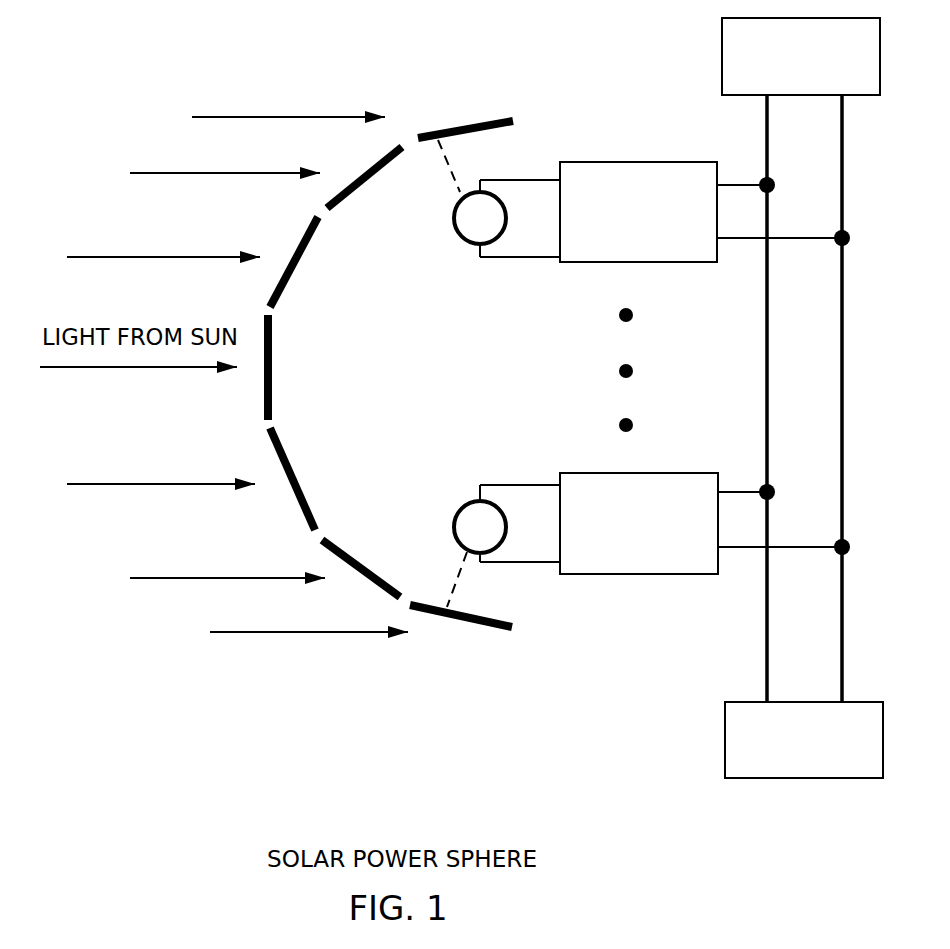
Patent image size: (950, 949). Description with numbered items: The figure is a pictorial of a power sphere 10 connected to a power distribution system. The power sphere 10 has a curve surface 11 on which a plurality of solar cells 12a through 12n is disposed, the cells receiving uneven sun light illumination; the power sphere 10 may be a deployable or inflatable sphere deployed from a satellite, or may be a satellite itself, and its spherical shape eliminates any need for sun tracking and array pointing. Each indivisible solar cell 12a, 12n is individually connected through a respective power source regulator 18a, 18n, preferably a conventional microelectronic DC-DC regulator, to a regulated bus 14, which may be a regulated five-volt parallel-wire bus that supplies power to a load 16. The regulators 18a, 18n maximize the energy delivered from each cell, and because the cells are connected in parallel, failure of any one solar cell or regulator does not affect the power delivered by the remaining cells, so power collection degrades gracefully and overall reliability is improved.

The power sphere 10 is at (513, 625).
The curve surface 11 is at (271, 418).
The solar cell 12a is at (455, 229).
The solar cell 12n is at (460, 506).
The regulated bus 14 is at (722, 53).
The load 16 is at (817, 778).
The power source regulator 18a is at (655, 262).
The power source regulator 18n is at (662, 473).